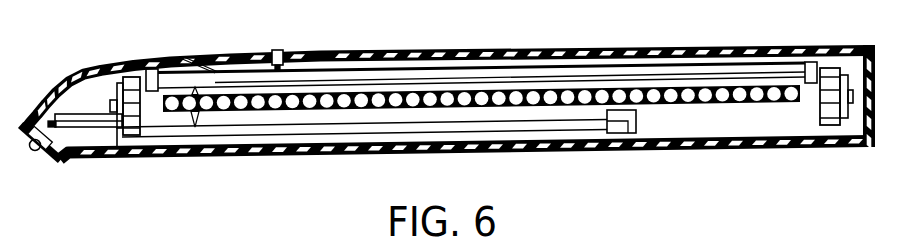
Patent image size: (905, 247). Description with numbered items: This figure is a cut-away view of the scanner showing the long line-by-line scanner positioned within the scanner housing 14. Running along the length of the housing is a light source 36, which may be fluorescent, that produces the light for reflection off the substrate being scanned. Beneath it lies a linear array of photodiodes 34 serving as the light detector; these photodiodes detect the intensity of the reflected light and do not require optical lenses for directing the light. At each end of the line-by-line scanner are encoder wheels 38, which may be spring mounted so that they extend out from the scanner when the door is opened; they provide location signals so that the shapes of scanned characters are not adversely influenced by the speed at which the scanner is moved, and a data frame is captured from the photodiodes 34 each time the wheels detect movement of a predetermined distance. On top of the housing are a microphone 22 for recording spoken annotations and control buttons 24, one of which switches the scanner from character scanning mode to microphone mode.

The scanner housing 14 is at (770, 143).
The microphone 22 is at (186, 54).
The control buttons 24 is at (283, 50).
The linear array of photodiodes 34 is at (687, 102).
The light source 36 is at (507, 73).
The encoder wheels 38 is at (117, 65).